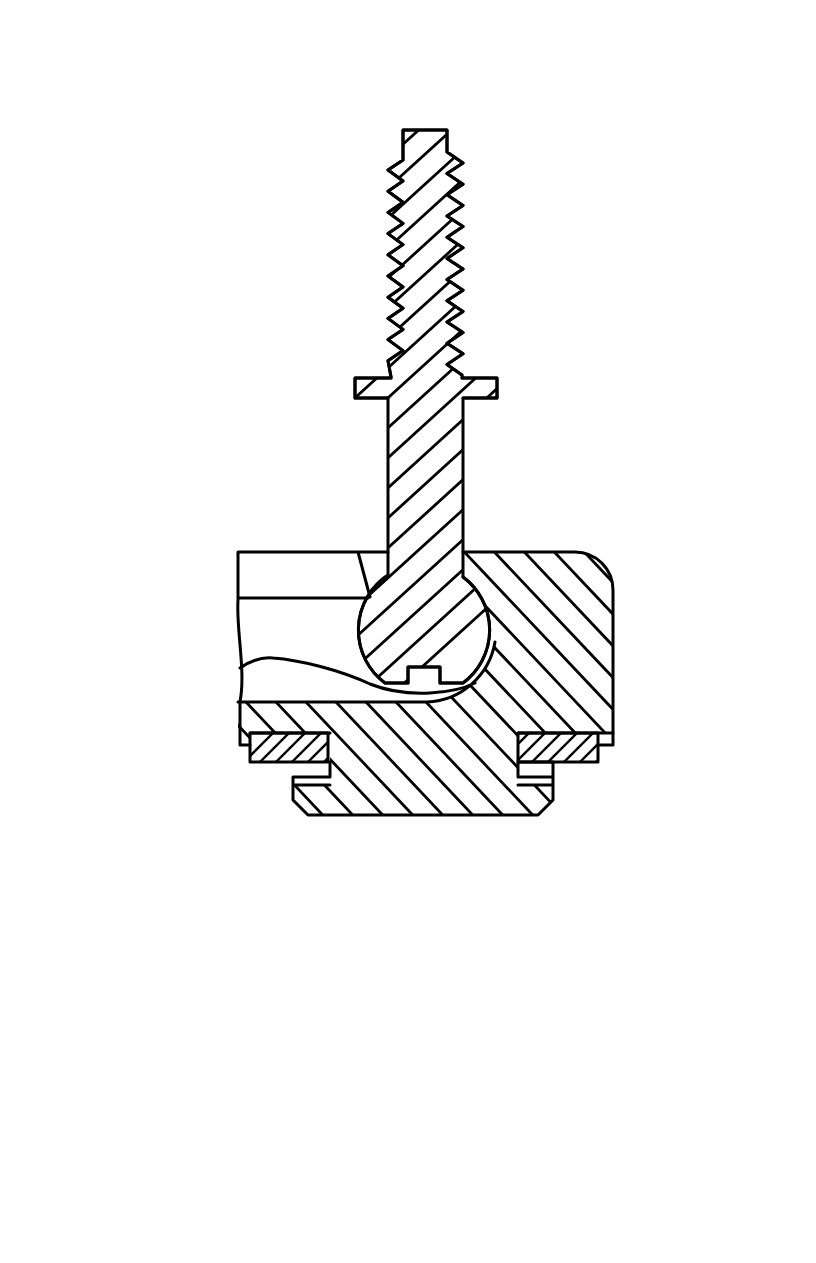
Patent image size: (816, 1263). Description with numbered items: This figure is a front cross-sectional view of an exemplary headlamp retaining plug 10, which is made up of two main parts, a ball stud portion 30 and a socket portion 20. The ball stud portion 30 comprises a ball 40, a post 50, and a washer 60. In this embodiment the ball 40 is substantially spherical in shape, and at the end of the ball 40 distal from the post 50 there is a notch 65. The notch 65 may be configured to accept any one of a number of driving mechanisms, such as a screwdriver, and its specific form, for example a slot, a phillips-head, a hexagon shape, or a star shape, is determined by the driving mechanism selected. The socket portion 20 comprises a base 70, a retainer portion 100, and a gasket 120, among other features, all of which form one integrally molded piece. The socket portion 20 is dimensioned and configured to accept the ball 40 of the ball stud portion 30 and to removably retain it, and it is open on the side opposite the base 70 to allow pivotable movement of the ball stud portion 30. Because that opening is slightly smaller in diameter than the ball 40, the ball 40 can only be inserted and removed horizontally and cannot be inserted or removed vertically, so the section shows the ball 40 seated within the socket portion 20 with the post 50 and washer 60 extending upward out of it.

The headlamp retaining plug 10 is at (163, 111).
The socket portion 20 is at (546, 542).
The ball stud portion 30 is at (478, 263).
The ball 40 is at (358, 636).
The post 50 is at (390, 253).
The washer 60 is at (355, 392).
The notch 65 is at (241, 668).
The base 70 is at (240, 720).
The retainer portion 100 is at (362, 810).
The gasket 120 is at (600, 760).